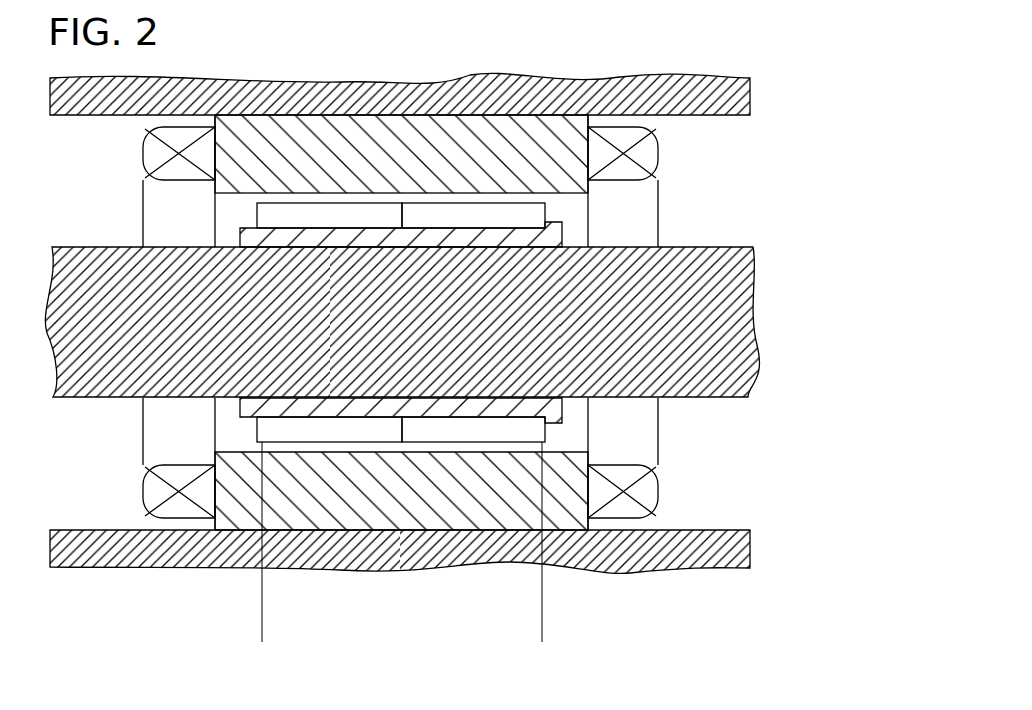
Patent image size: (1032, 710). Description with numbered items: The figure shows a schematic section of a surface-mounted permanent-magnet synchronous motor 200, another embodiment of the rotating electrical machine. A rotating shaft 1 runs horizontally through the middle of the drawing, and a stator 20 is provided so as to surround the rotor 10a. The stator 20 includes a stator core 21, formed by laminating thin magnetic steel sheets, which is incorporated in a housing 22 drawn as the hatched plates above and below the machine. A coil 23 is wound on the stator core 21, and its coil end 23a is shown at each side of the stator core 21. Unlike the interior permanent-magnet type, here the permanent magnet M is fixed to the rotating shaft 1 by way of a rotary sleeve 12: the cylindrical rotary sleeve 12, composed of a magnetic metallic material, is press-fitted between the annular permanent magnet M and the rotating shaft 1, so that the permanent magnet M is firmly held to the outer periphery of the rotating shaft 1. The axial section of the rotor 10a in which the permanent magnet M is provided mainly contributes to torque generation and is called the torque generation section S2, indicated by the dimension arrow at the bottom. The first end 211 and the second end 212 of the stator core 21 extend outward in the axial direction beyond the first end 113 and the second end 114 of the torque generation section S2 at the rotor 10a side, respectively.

The surface-mounted permanent-magnet synchronous motor 200 is at (847, 80).
The housing 22 is at (736, 92).
The rotating shaft 1 is at (737, 318).
The stator 20 is at (697, 132).
The stator core 21 is at (405, 128).
The first end of the stator core 211 is at (213, 452).
The second end of the stator core 212 is at (590, 455).
The coil end 23a is at (148, 155).
The coil 23 is at (158, 205).
The rotary sleeve 12 is at (550, 238).
The rotor 10a is at (697, 239).
The permanent magnet M is at (528, 217).
The first end of the torque generation section 113 is at (255, 428).
The second end of the torque generation section 114 is at (552, 436).
The torque generation section S2 is at (528, 631).